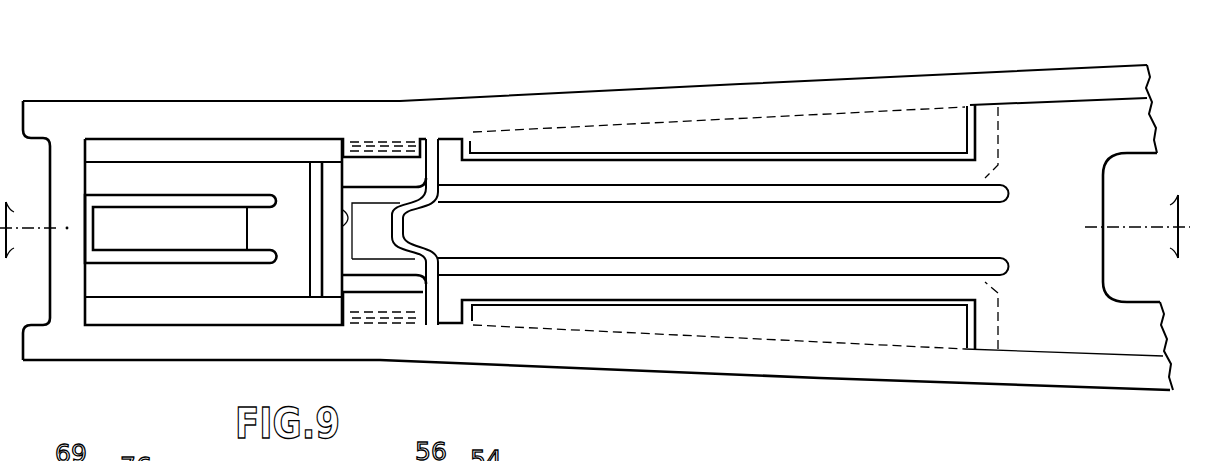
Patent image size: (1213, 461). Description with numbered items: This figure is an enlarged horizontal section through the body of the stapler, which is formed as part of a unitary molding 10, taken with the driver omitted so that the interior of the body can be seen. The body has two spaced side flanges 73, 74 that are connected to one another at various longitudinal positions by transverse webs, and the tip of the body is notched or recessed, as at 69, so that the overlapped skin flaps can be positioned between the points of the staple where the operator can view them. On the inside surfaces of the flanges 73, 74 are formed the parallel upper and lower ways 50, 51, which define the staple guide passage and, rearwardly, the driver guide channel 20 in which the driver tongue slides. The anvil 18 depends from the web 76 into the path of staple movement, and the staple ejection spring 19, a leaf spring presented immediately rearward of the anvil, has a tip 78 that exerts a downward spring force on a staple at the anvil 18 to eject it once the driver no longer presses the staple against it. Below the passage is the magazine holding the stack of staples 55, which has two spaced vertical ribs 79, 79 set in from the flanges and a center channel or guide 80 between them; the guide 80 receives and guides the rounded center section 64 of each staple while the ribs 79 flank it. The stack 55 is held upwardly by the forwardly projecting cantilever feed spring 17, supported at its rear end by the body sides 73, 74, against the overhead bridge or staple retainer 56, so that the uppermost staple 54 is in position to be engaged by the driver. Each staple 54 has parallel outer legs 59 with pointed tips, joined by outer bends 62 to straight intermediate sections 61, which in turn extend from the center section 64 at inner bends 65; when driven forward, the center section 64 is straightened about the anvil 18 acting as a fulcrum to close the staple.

The unitary molding 10 is at (606, 211).
The feed spring 17 is at (740, 249).
The anvil 18 is at (63, 172).
The staple ejection spring 19 is at (190, 250).
The driver guide channel 20 is at (640, 339).
The upper driver guide way 50 is at (735, 228).
The lower driver guide way 51 is at (772, 231).
The staple 54 is at (403, 227).
The stack of staples 55 is at (435, 236).
The staple retainer 56 is at (354, 141).
The outer leg 59 is at (386, 147).
The intermediate section 61 is at (440, 190).
The outer bend 62 is at (439, 166).
The center section 64 is at (392, 228).
The inner bend 65 is at (427, 250).
The notch 69 is at (43, 298).
The side flange 73 is at (650, 88).
The side flange 74 is at (745, 379).
The web 76 is at (59, 270).
The tip of ejection spring 78 is at (96, 226).
The vertical rib 79 is at (398, 178).
The center channel 80 is at (340, 218).